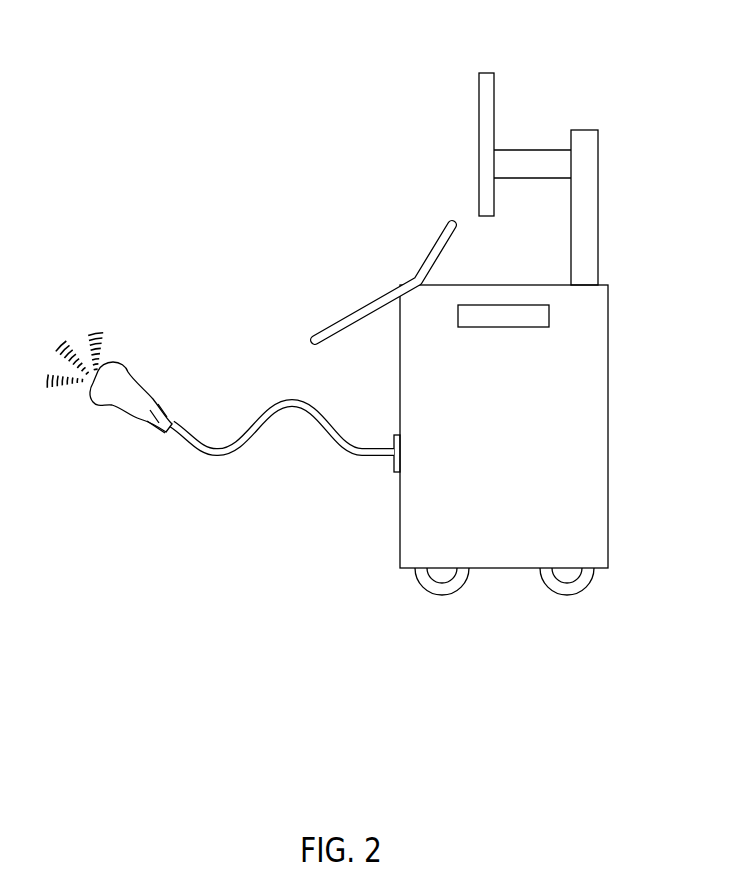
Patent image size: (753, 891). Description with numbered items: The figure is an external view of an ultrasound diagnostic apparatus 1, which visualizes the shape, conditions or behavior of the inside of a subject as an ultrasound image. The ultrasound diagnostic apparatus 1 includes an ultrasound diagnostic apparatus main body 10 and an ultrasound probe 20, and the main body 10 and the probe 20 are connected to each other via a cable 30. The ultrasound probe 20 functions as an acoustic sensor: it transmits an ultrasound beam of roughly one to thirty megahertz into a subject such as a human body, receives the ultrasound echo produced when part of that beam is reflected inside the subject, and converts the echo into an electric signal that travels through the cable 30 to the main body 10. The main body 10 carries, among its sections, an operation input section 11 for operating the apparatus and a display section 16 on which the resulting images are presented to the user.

The ultrasound diagnostic apparatus 1 is at (623, 59).
The ultrasound diagnostic apparatus main body 10 is at (608, 360).
The operation input section 11 is at (342, 318).
The display section 16 is at (479, 107).
The ultrasound probe 20 is at (100, 408).
The cable 30 is at (218, 456).